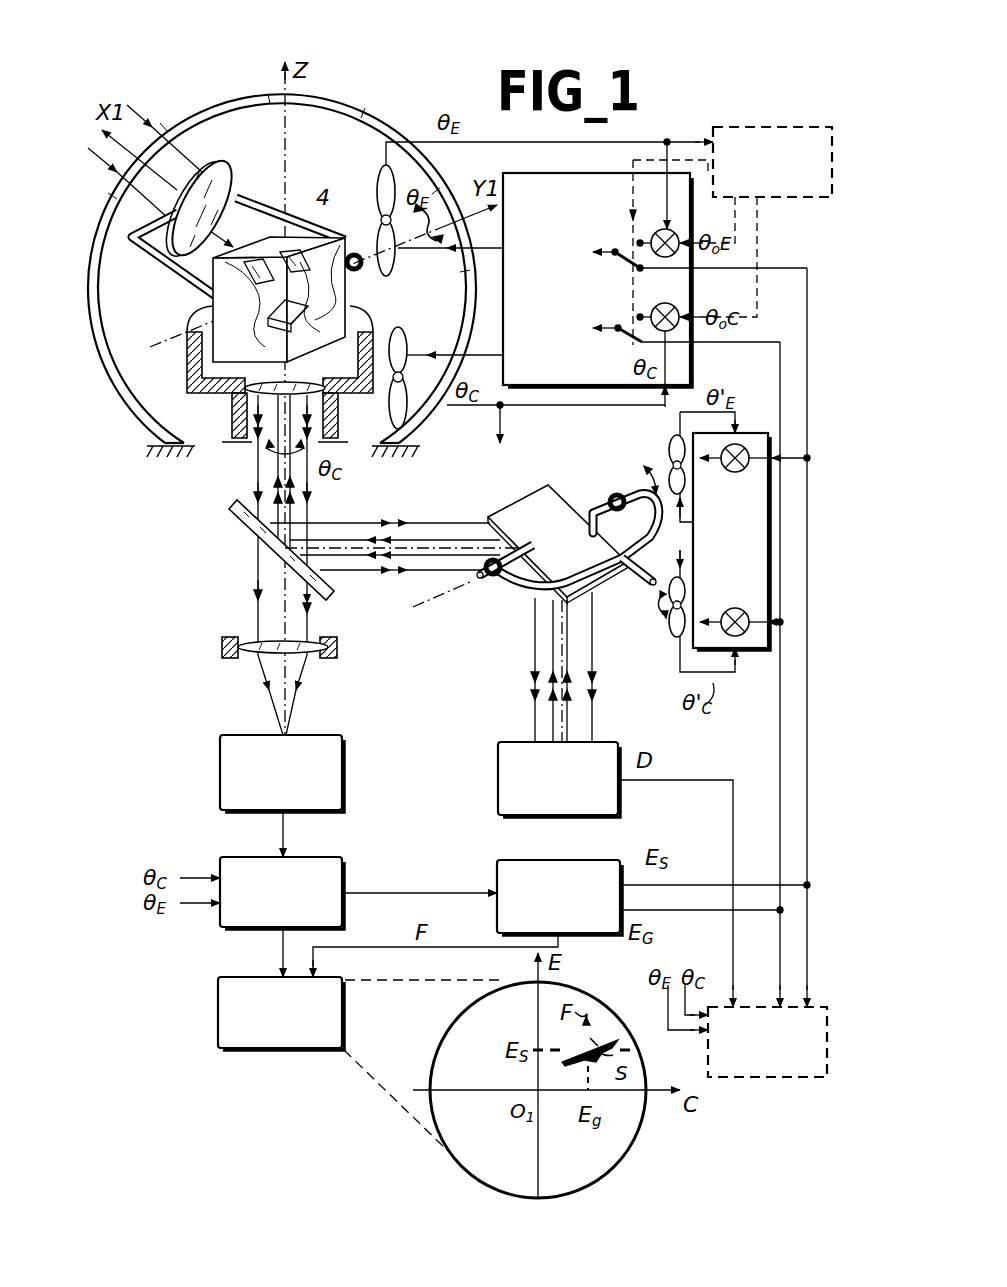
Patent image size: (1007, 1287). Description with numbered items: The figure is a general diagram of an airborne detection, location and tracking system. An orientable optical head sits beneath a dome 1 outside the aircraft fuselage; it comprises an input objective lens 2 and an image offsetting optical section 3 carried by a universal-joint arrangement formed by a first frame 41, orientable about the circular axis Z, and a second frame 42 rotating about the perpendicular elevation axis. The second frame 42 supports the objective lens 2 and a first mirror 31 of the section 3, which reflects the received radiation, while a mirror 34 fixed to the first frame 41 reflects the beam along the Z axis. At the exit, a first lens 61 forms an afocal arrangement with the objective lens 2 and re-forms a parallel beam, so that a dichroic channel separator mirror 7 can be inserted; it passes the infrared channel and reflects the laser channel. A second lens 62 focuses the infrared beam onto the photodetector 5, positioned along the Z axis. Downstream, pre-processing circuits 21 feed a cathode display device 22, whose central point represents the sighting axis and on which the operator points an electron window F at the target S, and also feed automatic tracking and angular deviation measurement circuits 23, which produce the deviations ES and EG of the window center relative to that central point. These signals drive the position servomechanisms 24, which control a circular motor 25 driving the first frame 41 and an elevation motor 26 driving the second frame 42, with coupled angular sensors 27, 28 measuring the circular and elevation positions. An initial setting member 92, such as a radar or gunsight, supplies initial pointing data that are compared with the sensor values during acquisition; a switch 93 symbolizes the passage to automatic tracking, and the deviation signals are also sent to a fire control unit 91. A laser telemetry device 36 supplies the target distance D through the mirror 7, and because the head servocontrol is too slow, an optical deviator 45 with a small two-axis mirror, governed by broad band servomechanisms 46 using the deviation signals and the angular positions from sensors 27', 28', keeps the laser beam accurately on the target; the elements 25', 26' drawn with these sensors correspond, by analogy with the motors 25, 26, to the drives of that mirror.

The dome 1 is at (209, 112).
The input objective lens 2 is at (227, 179).
The image offsetting optical section 3 is at (292, 290).
The photodetector 5 is at (227, 735).
The channel separator mirror 7 is at (230, 505).
The pre-processing circuits 21 is at (342, 867).
The cathode display device 22 is at (213, 1000).
The automatic tracking and angular deviation measurement circuits 23 is at (548, 858).
The position servomechanisms 24 is at (598, 267).
The circular motor 25 is at (410, 337).
The elevation motor 26 is at (367, 244).
The angular sensor 27 is at (415, 400).
The angular sensor 28 is at (369, 190).
The first mirror 31 is at (264, 268).
The exit mirror 34 is at (268, 320).
The laser telemetry device 36 is at (498, 747).
The first frame 41 is at (324, 412).
The second frame 42 is at (170, 275).
The optical deviator 45 is at (510, 501).
The deviation control circuits 46 is at (758, 434).
The first lens 61 is at (293, 385).
The second lens 62 is at (250, 637).
The ancillary utilization unit 91 is at (760, 1078).
The initial setting member 92 is at (747, 127).
The switch 93 is at (620, 322).
The laser mirror bearing motor 25' is at (653, 598).
The laser mirror elevation sensor 26' is at (642, 468).
The angular sensor 27' is at (655, 632).
The angular sensor 28' is at (660, 442).